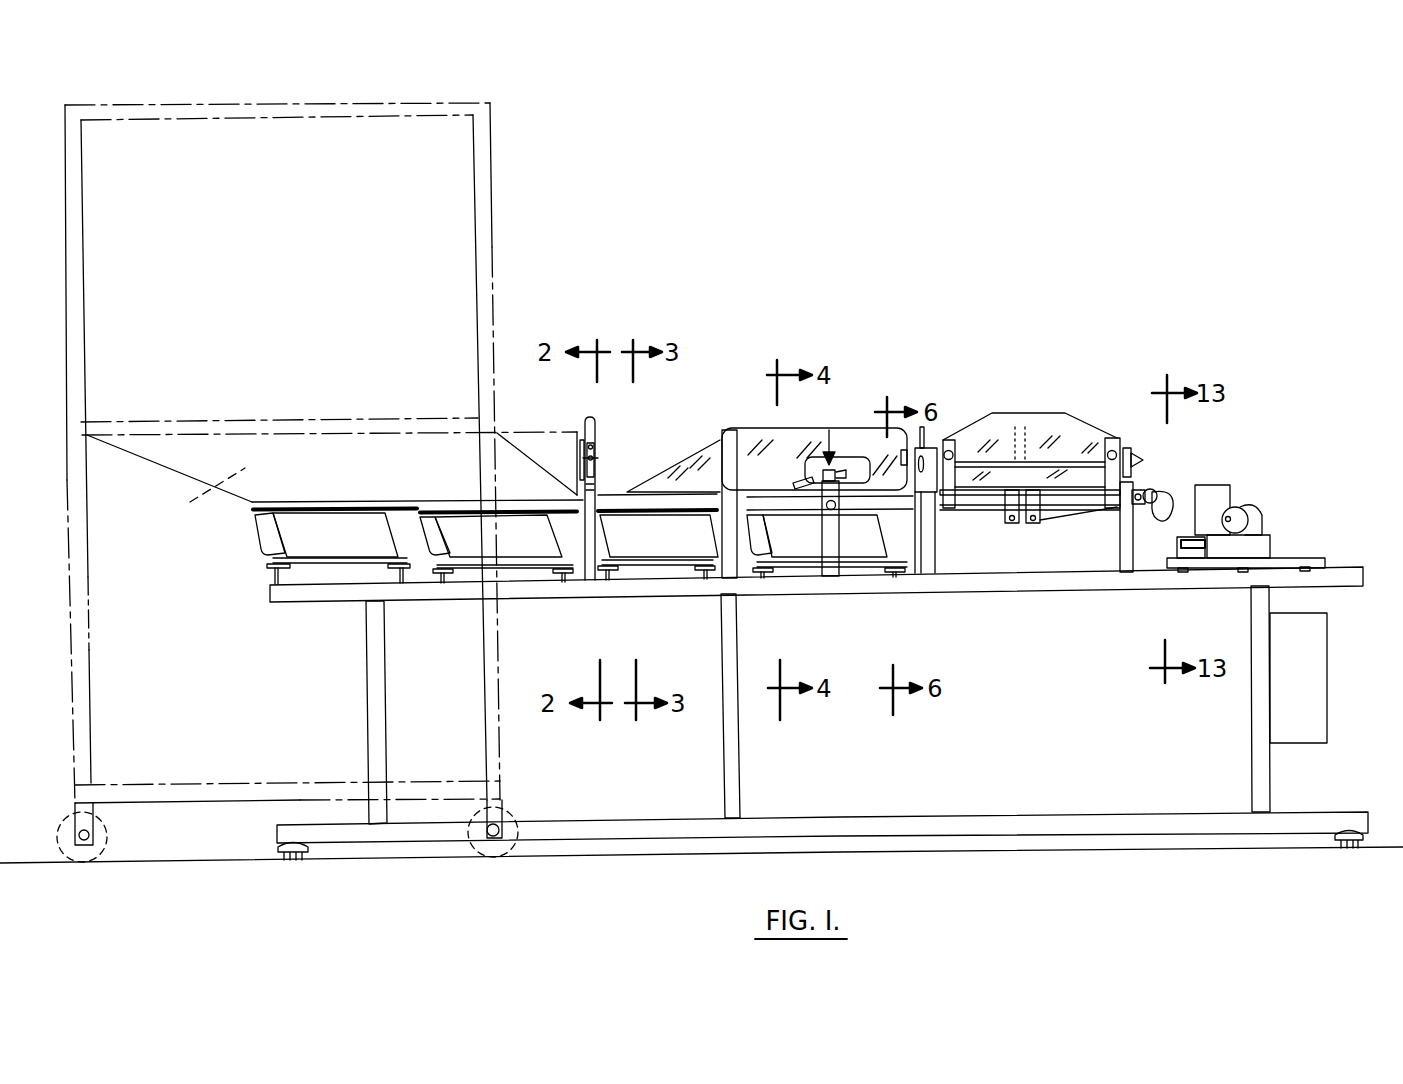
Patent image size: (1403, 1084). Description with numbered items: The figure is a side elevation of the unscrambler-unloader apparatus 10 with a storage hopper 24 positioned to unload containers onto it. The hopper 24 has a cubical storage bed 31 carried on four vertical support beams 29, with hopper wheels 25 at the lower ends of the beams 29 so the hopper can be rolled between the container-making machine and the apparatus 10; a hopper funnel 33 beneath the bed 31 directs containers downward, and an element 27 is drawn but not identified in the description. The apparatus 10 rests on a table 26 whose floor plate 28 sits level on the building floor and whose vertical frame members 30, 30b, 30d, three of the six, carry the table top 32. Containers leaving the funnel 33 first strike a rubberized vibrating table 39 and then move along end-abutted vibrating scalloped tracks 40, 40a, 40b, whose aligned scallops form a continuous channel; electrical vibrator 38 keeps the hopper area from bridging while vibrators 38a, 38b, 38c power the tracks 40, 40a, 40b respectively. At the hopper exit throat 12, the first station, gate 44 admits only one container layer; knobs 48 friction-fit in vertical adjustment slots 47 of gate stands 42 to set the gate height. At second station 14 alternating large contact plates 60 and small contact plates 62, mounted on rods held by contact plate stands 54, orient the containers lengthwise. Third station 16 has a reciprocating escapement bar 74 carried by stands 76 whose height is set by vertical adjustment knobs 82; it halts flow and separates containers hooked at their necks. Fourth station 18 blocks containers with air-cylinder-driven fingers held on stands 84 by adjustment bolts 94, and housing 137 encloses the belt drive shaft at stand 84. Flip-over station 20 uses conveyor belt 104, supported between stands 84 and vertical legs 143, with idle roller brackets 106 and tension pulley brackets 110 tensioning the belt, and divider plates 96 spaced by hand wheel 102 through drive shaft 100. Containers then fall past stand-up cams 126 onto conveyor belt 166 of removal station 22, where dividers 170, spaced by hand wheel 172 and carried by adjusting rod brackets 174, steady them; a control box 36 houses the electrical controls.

The unscrambler-unloader apparatus 10 is at (978, 328).
The hopper exit throat 12 is at (612, 412).
The second station 14 is at (736, 418).
The third station 16 is at (829, 428).
The fourth station 18 is at (940, 436).
The flip-over station 20 is at (1036, 391).
The removal station 22 is at (1187, 476).
The storage hopper 24 is at (516, 212).
The hopper wheels 25 is at (107, 832).
The table 26 is at (772, 775).
The lower crossbar 27 is at (250, 793).
The floor plate 28 is at (1030, 815).
The vertical support beams 29 is at (87, 668).
The vertical frame member 30 is at (382, 695).
The vertical frame member 30b is at (736, 748).
The vertical frame member 30d is at (1260, 748).
The cubical storage bed 31 is at (274, 268).
The table top 32 is at (1013, 583).
The hopper funnel 33 is at (205, 492).
The control box 36 is at (1310, 723).
The electrical vibrator 38 is at (341, 545).
The electrical vibrator 38a is at (508, 550).
The electrical vibrator 38b is at (637, 538).
The electrical vibrator 38c is at (863, 550).
The rubberized vibrating table 39 is at (252, 503).
The scalloped track 40 is at (454, 502).
The scalloped track 40a is at (662, 502).
The scalloped track 40b is at (787, 503).
The gate stand 42 is at (595, 487).
The gate 44 is at (577, 450).
The vertical adjustment slot 47 is at (593, 445).
The knob 48 is at (598, 457).
The contact plate stand 54 is at (740, 444).
The large contact plate 60 is at (683, 463).
The small contact plate 62 is at (710, 470).
The escapement bar 74 is at (838, 468).
The stand 76 is at (833, 553).
The vertical adjustment knob 82 is at (836, 510).
The stand 84 is at (947, 485).
The adjustment bolt 94 is at (905, 458).
The divider plate 96 is at (1050, 420).
The drive shaft 100 is at (1063, 460).
The hand wheel 102 is at (1133, 455).
The conveyor belt 104 is at (1063, 517).
The idle roller bracket 106 is at (1033, 525).
The tension pulley bracket 110 is at (1013, 525).
The stand-up cam 126 is at (1160, 513).
The housing 137 is at (930, 547).
The vertical leg 143 is at (1123, 555).
The conveyor belt 166 is at (1200, 549).
The divider 170 is at (1217, 493).
The hand wheel 172 is at (1267, 540).
The adjusting rod bracket 174 is at (1253, 517).